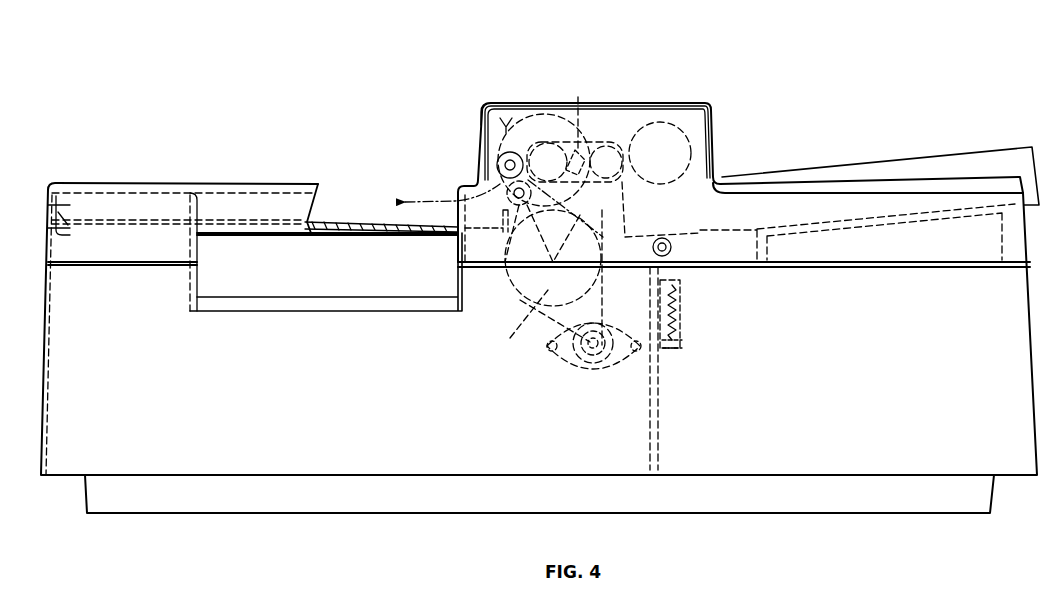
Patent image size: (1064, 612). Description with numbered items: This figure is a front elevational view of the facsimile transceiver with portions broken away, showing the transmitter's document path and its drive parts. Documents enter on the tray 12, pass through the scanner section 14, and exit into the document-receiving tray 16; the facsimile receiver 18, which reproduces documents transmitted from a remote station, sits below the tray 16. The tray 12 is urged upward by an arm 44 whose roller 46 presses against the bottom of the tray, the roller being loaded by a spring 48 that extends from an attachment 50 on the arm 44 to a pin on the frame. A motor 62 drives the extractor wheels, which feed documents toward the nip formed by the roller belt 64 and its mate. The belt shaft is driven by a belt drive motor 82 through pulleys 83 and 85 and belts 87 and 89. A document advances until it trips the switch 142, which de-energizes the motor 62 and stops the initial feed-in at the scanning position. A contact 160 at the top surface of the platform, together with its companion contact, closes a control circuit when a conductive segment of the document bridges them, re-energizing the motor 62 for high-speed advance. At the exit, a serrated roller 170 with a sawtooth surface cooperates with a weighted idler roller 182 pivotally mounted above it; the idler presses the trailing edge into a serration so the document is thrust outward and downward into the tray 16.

The tray 12 is at (832, 158).
The scanner section 14 is at (562, 97).
The document-receiving tray 16 is at (222, 159).
The facsimile receiver 18 is at (326, 278).
The arm 44 is at (682, 281).
The roller 46 is at (672, 247).
The spring 48 is at (682, 303).
The attachment 50 is at (680, 343).
The motor 62 is at (668, 163).
The roller belt 64 is at (560, 159).
The belt drive motor 82 is at (570, 368).
The pulley 83 is at (528, 311).
The pulley 85 is at (483, 111).
The belt 87 is at (525, 334).
The belt 89 is at (553, 275).
The switch 142 is at (582, 96).
The contact 160 is at (623, 222).
The serrated roller 170 is at (468, 219).
The weighted idler roller 182 is at (497, 160).